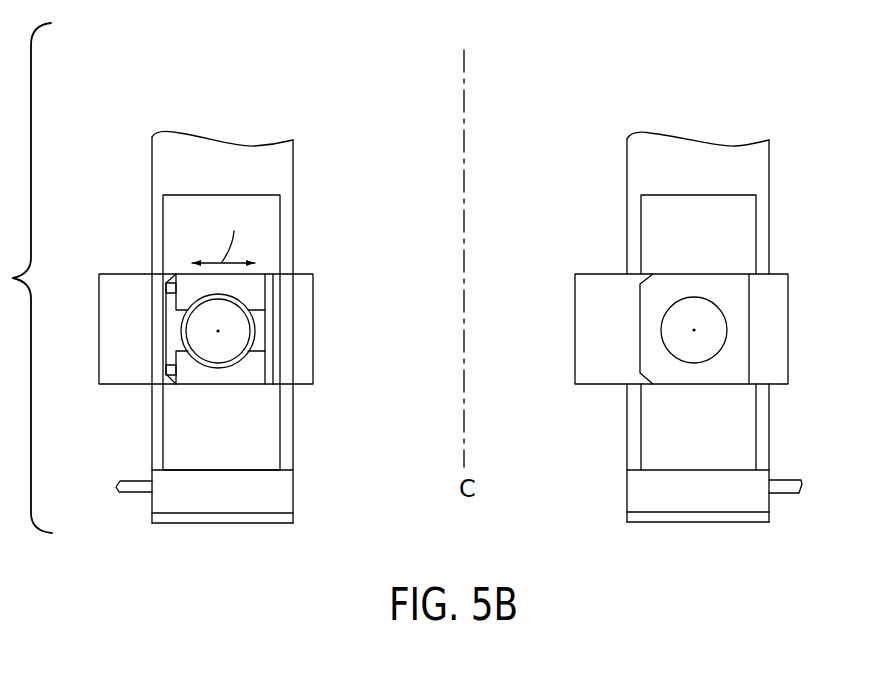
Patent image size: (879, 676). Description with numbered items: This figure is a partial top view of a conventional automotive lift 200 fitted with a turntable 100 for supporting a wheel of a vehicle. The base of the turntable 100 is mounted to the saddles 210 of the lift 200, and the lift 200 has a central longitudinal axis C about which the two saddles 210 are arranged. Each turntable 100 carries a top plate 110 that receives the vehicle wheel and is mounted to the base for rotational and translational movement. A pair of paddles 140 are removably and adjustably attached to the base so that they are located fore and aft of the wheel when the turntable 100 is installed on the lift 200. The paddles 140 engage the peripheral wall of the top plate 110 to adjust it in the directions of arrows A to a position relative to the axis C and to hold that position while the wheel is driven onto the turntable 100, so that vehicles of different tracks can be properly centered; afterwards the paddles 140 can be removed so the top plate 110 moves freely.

The automotive lift 200 is at (196, 58).
The saddles 210 is at (100, 302).
The turntable 100 is at (176, 261).
The top plate 110 is at (194, 327).
The paddles 140 is at (254, 281).